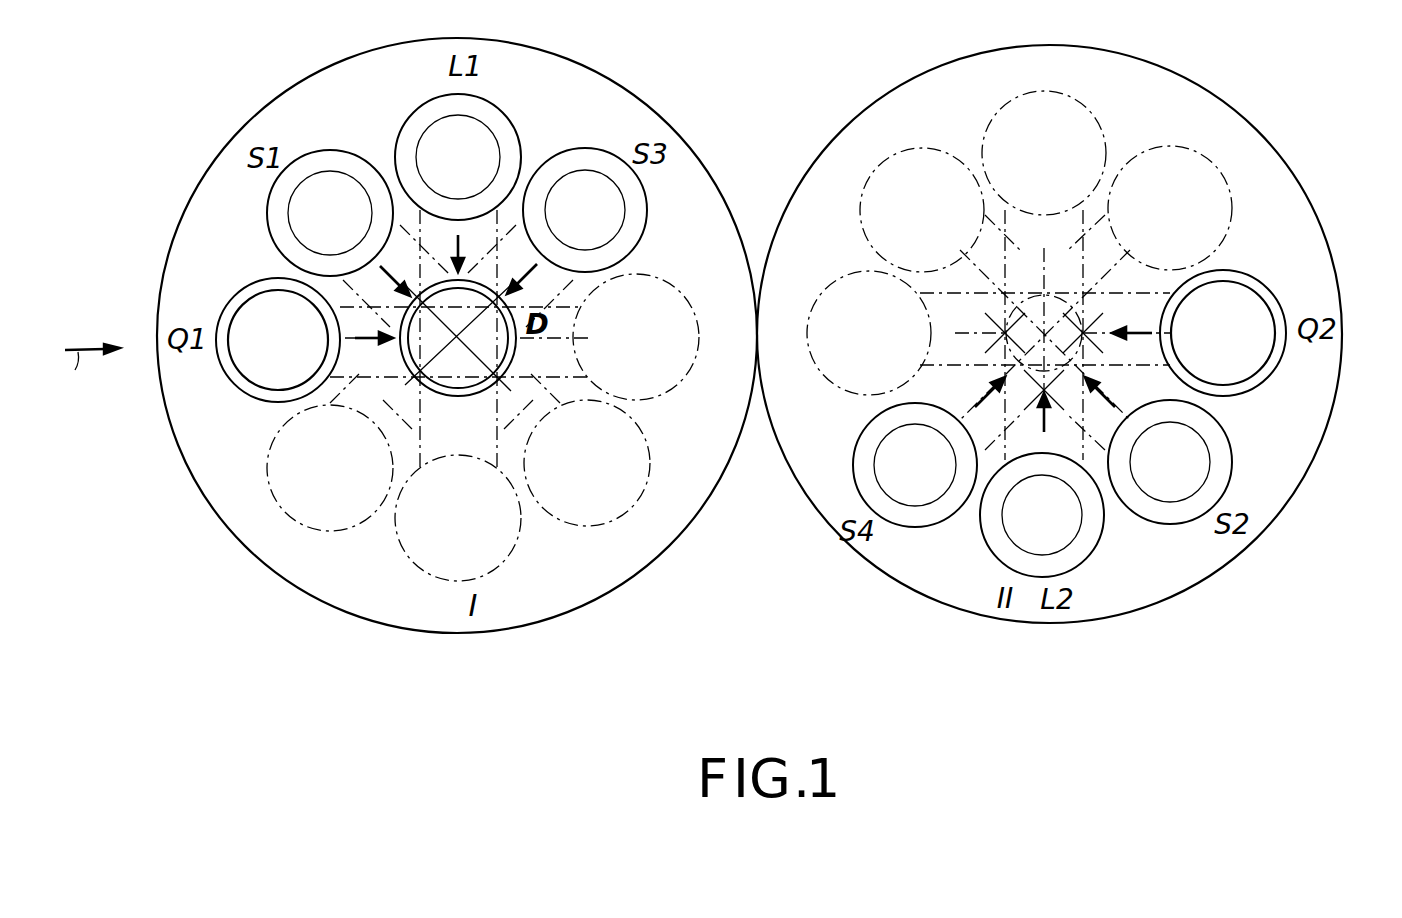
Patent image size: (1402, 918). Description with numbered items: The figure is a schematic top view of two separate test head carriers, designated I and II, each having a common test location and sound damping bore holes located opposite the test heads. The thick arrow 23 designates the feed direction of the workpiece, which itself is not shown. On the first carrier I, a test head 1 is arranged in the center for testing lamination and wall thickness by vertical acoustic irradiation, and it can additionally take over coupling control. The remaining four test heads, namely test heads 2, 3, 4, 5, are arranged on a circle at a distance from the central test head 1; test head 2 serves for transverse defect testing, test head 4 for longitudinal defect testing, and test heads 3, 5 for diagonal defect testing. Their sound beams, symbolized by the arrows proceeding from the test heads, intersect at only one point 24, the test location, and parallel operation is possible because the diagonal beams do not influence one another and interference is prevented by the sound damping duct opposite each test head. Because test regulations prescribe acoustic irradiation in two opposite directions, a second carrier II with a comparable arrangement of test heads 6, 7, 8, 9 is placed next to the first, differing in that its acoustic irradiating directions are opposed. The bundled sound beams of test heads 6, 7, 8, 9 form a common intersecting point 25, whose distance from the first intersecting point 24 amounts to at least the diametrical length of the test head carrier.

The test head 1 is at (455, 372).
The test head 2 is at (257, 367).
The test head 3 is at (302, 210).
The test head 4 is at (445, 148).
The test head 5 is at (613, 205).
The test head 6 is at (1243, 308).
The test head 7 is at (1177, 490).
The test head 8 is at (1017, 535).
The test head 9 is at (913, 488).
The thick arrow 23 is at (85, 380).
The intersecting point 24 is at (483, 310).
The common intersecting point 25 is at (1045, 333).